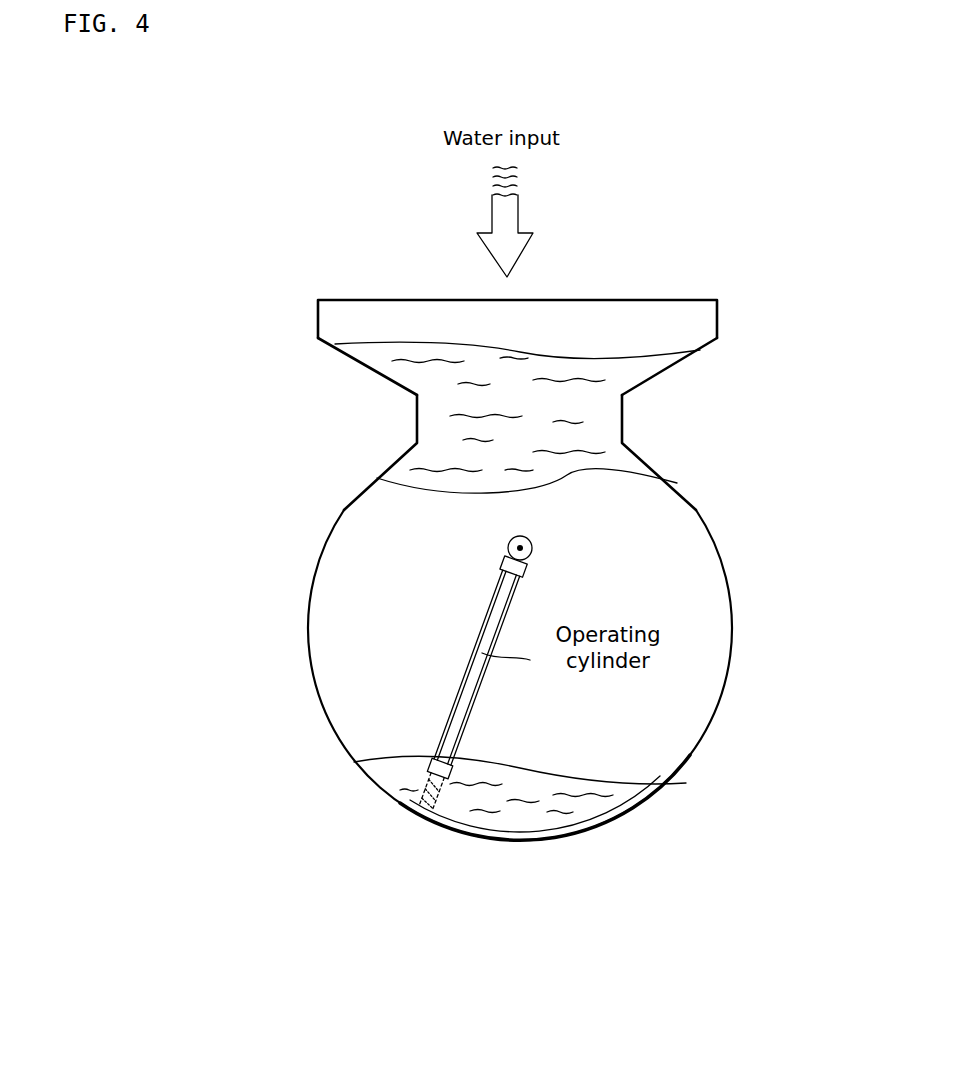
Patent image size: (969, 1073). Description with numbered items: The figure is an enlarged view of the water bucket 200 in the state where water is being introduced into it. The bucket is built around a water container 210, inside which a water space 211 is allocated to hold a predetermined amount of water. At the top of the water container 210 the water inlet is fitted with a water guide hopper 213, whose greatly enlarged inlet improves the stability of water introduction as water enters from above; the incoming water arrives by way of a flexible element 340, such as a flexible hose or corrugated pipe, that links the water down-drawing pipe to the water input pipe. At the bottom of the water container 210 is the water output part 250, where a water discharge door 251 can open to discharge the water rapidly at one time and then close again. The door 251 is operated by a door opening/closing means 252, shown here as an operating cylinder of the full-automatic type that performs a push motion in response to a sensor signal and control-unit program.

The water bucket 200 is at (368, 221).
The water container 210 is at (725, 572).
The water space 211 is at (628, 457).
The water guide hopper 213 is at (719, 303).
The flexible element 340 is at (565, 403).
The water output part 250 is at (486, 853).
The water discharge door 251 is at (565, 838).
The door opening/closing means 252 is at (408, 681).